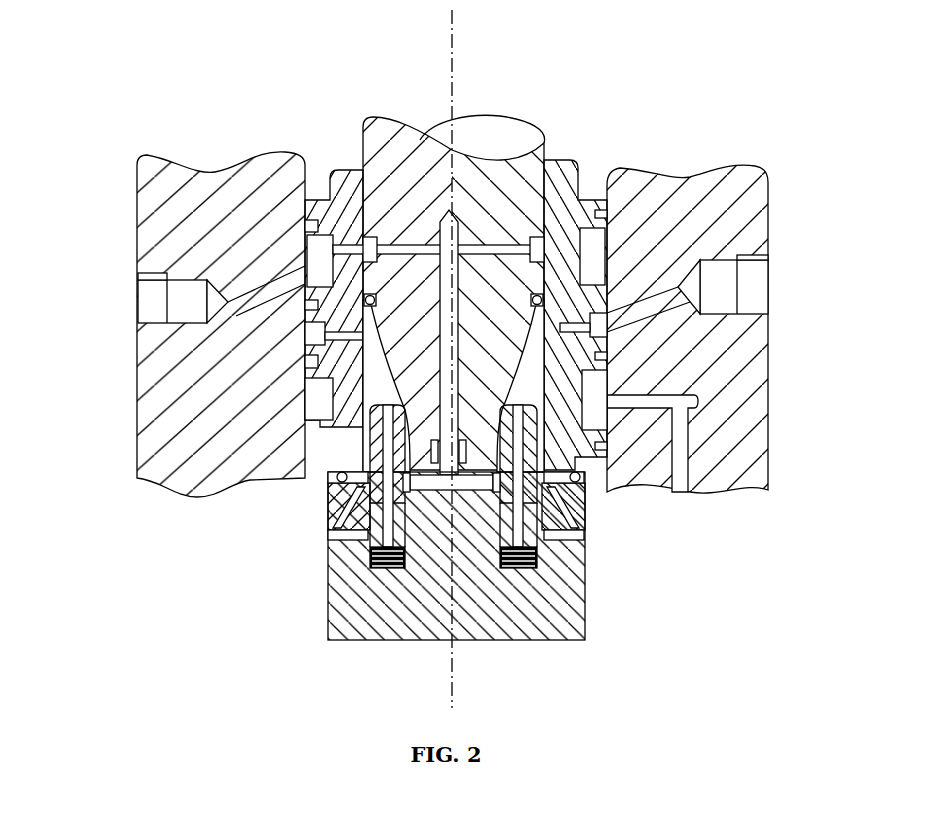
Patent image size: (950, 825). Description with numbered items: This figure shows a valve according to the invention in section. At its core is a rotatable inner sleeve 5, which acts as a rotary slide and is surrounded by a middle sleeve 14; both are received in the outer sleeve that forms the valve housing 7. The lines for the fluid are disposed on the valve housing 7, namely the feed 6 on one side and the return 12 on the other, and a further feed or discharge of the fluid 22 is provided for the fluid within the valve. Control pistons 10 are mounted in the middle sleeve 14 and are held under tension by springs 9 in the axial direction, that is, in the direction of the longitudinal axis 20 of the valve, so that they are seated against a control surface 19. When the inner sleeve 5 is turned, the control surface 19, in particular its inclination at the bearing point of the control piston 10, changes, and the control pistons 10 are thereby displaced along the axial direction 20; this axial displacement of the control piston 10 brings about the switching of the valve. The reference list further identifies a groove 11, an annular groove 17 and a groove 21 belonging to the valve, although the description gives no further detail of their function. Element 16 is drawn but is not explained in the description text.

The inner sleeve 5 is at (381, 130).
The feed 6 is at (777, 290).
The valve housing 7 is at (750, 463).
The spring 9 is at (332, 627).
The control piston 10 is at (362, 470).
The groove 11 is at (485, 530).
The return 12 is at (128, 310).
The middle sleeve 14 is at (570, 160).
The transverse pin / channel 16 is at (595, 243).
The annular groove 17 is at (597, 385).
The control surface 19 is at (330, 480).
The longitudinal axis 20 is at (457, 98).
The groove 21 is at (500, 500).
The feed or discharge of the fluid 22 is at (356, 562).